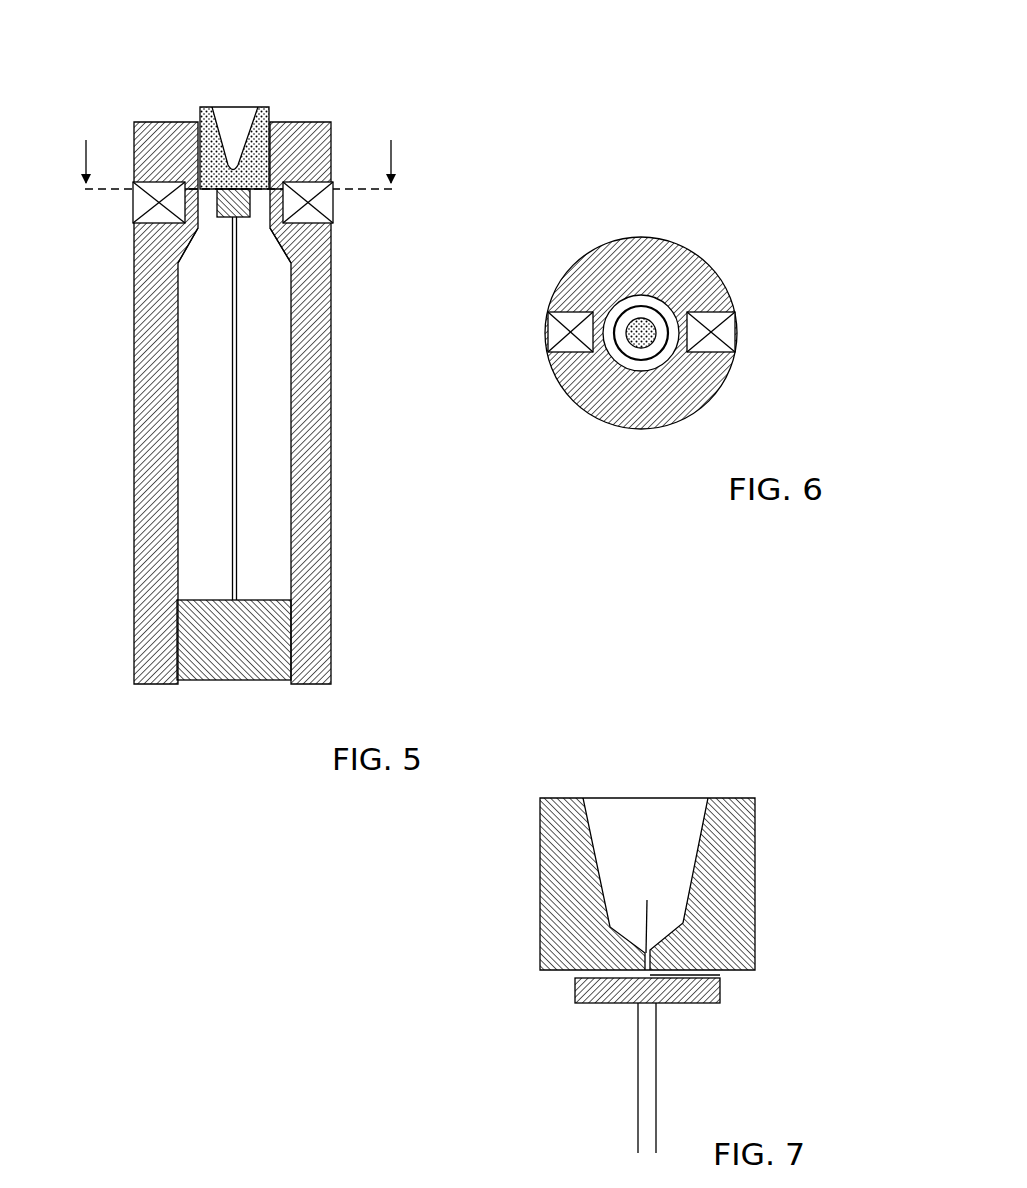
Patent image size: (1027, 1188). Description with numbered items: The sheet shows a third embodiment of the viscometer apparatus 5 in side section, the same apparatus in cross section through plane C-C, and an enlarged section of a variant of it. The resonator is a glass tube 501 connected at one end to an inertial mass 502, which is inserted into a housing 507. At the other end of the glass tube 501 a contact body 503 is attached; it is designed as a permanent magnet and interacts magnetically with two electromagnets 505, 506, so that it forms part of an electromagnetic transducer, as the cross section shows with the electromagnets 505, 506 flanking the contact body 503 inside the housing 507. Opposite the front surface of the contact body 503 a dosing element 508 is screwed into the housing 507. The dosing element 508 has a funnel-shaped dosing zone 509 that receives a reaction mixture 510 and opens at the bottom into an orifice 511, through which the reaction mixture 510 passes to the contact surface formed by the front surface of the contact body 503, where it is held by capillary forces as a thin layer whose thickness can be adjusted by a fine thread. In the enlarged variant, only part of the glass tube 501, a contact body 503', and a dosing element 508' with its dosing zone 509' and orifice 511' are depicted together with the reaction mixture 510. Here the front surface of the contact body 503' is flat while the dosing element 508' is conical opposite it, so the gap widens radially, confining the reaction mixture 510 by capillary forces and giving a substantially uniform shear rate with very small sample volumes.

In FIG. 5, the apparatus 5 is at (118, 90).
In FIG. 5, the glass tube 501 is at (237, 512).
In FIG. 7, the glass tube 501 is at (657, 1078).
In FIG. 5, the inertial mass 502 is at (268, 638).
In FIG. 5, the contact body 503 is at (310, 276).
In FIG. 6, the contact body 503 is at (626, 394).
In FIG. 7, the contact body 503' is at (701, 1010).
In FIG. 5, the electromagnet 505 is at (133, 232).
In FIG. 6, the electromagnet 505 is at (555, 333).
In FIG. 5, the electromagnet 506 is at (333, 228).
In FIG. 6, the electromagnet 506 is at (725, 335).
In FIG. 5, the housing 507 is at (315, 458).
In FIG. 6, the housing 507 is at (627, 250).
In FIG. 5, the dosing element 508 is at (236, 117).
In FIG. 7, the dosing element 508' is at (701, 884).
In FIG. 5, the dosing zone 509 is at (203, 117).
In FIG. 7, the dosing zone 509' is at (604, 763).
In FIG. 5, the reaction mixture 510 is at (233, 203).
In FIG. 6, the reaction mixture 510 is at (652, 342).
In FIG. 7, the reaction mixture 510 is at (720, 975).
In FIG. 5, the orifice 511 is at (224, 96).
In FIG. 7, the orifice 511' is at (674, 827).